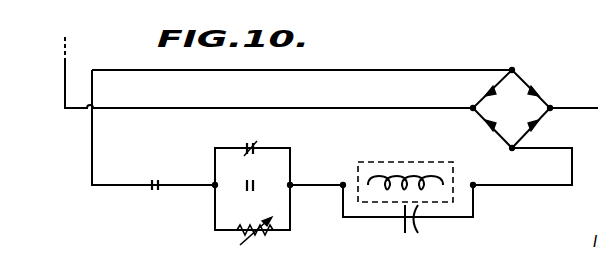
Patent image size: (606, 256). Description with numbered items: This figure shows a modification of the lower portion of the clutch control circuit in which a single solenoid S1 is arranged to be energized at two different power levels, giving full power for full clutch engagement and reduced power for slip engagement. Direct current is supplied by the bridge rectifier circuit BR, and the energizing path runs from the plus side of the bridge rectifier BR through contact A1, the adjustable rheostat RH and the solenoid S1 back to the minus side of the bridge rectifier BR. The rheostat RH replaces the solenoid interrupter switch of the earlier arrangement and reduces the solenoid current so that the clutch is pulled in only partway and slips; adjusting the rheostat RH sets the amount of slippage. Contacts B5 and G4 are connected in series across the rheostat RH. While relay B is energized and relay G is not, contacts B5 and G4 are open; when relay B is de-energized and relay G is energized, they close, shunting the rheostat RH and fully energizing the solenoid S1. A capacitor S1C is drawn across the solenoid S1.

The contact A1 is at (155, 177).
The contact G4 is at (247, 177).
The contact B5 is at (252, 139).
The adjustable rheostat RH is at (255, 236).
The solenoid S1 is at (405, 182).
The capacitor S1C is at (431, 221).
The bridge rectifier circuit BR is at (511, 109).